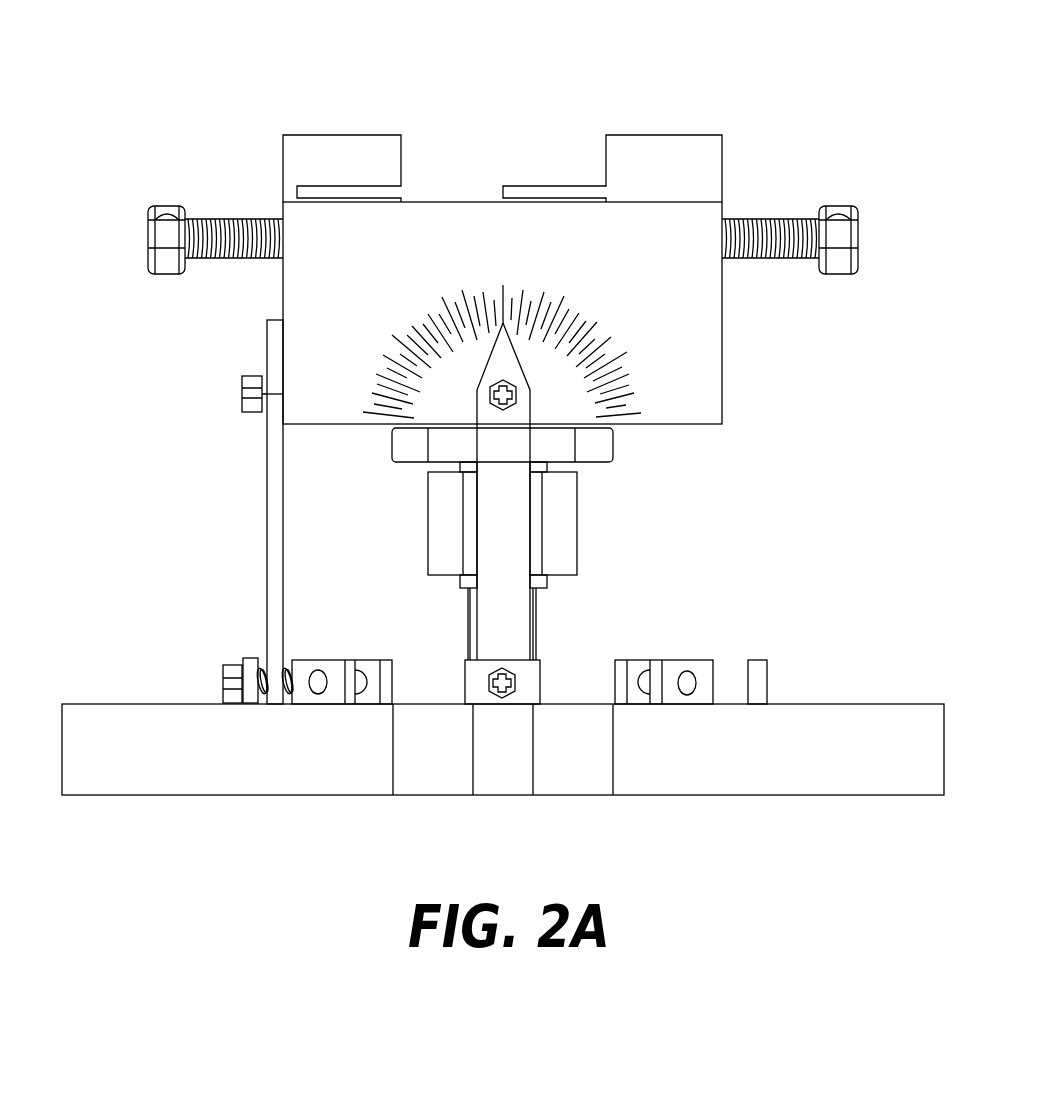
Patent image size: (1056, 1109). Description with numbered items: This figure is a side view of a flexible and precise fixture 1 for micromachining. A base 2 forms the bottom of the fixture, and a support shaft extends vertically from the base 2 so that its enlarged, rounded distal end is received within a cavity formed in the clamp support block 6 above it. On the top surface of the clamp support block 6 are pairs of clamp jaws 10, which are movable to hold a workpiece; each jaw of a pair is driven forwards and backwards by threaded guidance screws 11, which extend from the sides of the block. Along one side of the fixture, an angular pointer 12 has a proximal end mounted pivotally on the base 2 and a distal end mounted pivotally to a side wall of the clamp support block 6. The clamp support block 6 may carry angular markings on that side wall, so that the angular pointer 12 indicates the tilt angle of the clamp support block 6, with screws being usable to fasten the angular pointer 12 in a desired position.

The flexible and precise fixture 1 is at (918, 139).
The base 2 is at (925, 730).
The clamp support block 6 is at (707, 358).
The clamp jaws 10 is at (402, 91).
The threaded guidance screws 11 is at (167, 230).
The angular pointer 12 is at (273, 553).